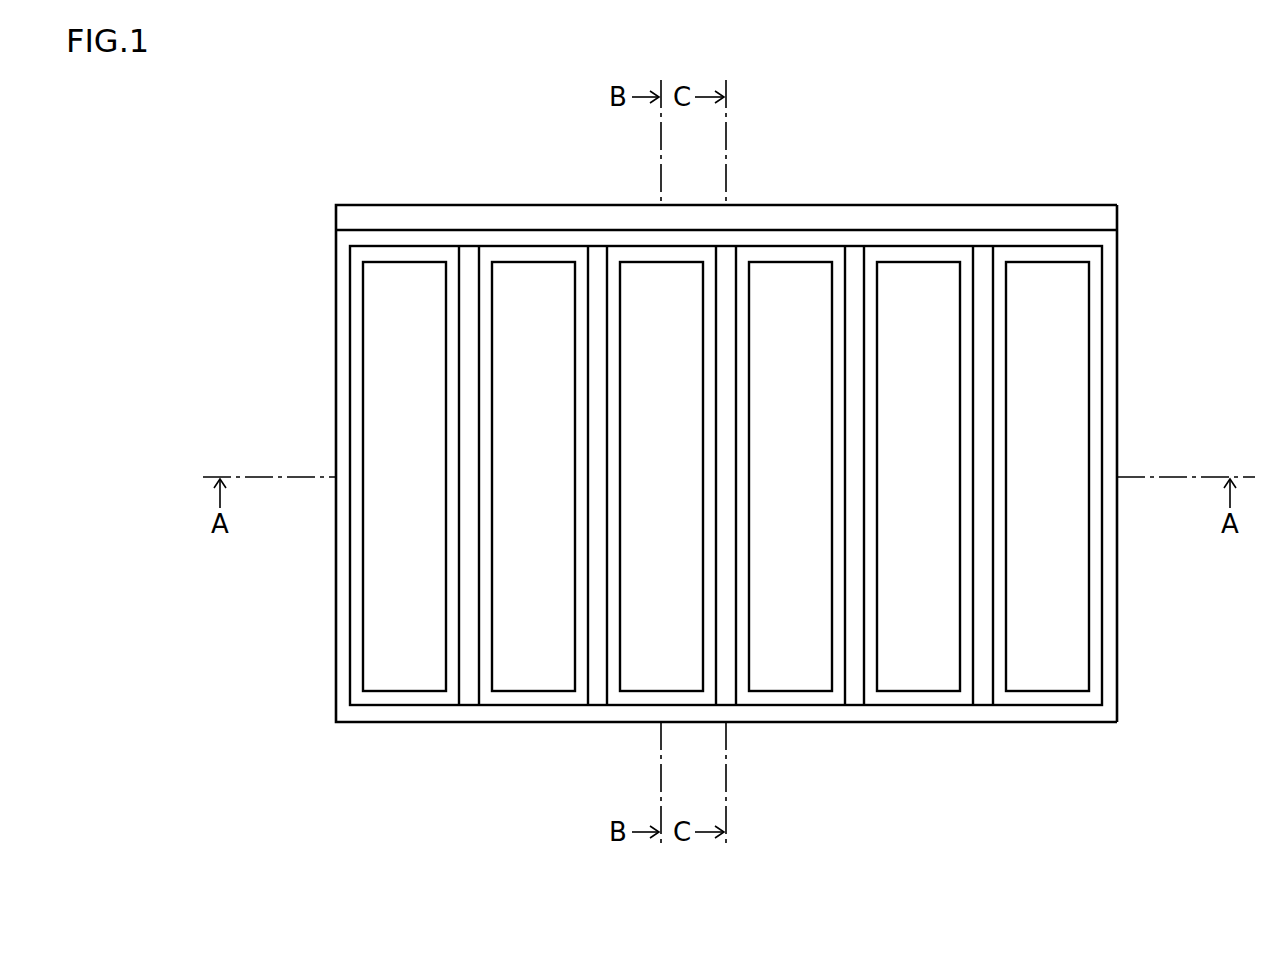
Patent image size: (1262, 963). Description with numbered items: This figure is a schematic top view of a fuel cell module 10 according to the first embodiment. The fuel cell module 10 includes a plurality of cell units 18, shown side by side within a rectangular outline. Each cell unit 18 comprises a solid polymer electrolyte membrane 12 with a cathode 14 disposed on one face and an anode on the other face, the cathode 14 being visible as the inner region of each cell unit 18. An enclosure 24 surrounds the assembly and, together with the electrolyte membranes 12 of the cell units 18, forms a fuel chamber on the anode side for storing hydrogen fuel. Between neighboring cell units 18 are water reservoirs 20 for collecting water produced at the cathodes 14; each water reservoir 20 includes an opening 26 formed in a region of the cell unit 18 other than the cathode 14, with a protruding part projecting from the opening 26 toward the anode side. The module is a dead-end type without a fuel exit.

The fuel cell module 10 is at (1050, 166).
The solid polymer electrolyte membrane 12 is at (1099, 476).
The cathode 14 is at (1068, 584).
The cell unit 18 is at (922, 694).
The water reservoir 20 is at (856, 694).
The enclosure 24 is at (1118, 632).
The opening 26 is at (853, 254).